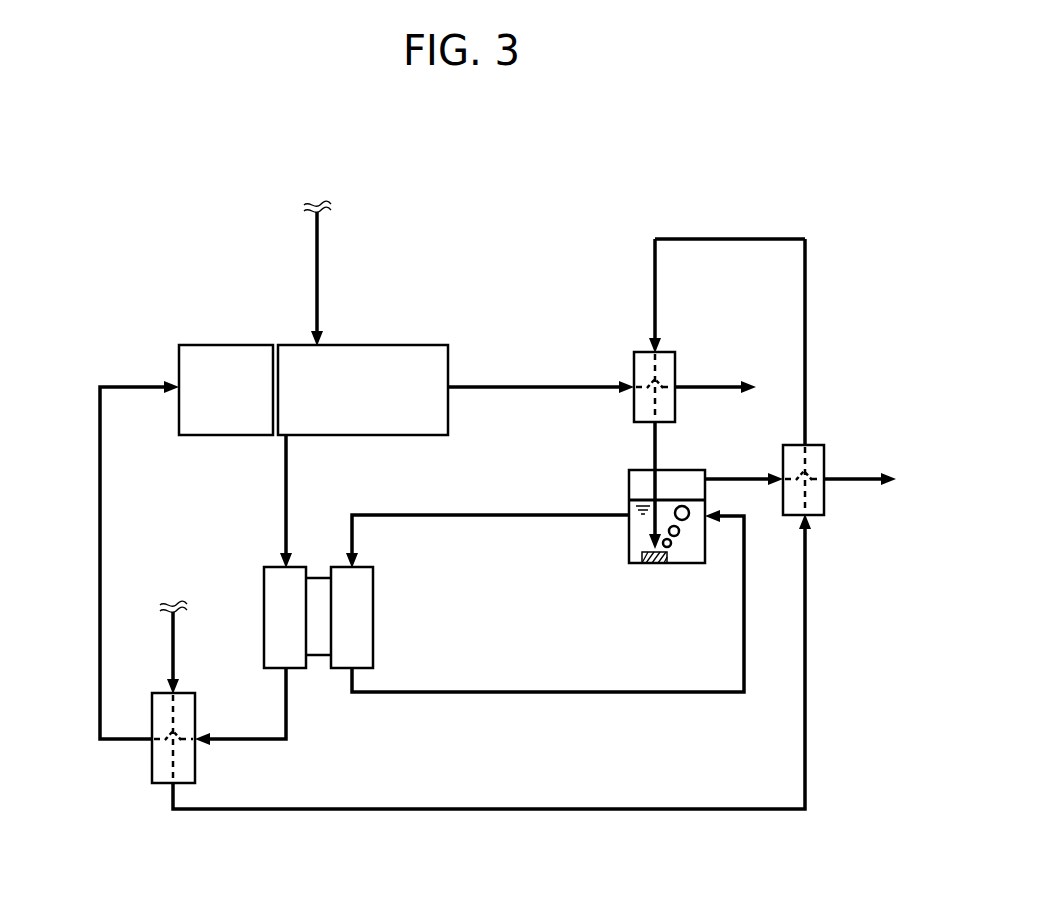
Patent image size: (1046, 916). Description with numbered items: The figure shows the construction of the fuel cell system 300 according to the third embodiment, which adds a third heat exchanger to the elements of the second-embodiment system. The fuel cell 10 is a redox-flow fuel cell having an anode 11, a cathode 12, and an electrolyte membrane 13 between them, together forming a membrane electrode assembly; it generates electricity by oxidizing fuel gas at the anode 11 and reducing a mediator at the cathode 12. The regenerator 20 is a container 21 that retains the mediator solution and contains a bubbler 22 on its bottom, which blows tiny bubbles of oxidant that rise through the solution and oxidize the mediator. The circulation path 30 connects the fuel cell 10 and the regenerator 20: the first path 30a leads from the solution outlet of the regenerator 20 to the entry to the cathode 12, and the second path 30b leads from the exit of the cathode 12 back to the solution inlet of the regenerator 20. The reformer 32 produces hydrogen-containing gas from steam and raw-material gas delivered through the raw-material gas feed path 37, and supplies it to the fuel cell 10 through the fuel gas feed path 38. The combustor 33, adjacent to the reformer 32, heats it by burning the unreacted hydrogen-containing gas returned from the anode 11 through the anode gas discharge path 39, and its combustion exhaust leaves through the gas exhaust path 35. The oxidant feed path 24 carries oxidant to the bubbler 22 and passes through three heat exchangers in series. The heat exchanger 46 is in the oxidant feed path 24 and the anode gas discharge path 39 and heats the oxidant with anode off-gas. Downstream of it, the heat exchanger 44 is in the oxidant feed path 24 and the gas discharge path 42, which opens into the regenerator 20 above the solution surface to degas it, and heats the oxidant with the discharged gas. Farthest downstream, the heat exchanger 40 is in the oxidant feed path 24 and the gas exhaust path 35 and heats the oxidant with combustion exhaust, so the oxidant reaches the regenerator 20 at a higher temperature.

The fuel cell system 300 is at (688, 196).
The fuel cell 10 is at (317, 646).
The anode 11 is at (280, 641).
The cathode 12 is at (355, 611).
The electrolyte membrane 13 is at (315, 645).
The regenerator 20 is at (663, 575).
The container 21 is at (687, 565).
The bubbler 22 is at (653, 565).
The oxidant feed path 24 is at (466, 814).
The circulation path 30 is at (545, 565).
The first path 30a is at (534, 512).
The second path 30b is at (512, 690).
The reformer 32 is at (369, 345).
The combustor 33 is at (224, 345).
The gas exhaust path 35 is at (550, 381).
The raw-material gas feed path 37 is at (316, 241).
The fuel gas feed path 38 is at (286, 492).
The anode gas discharge path 39 is at (96, 557).
The heat exchanger 40 is at (677, 366).
The gas discharge path 42 is at (742, 476).
The heat exchanger 44 is at (826, 456).
The heat exchanger 46 is at (150, 768).